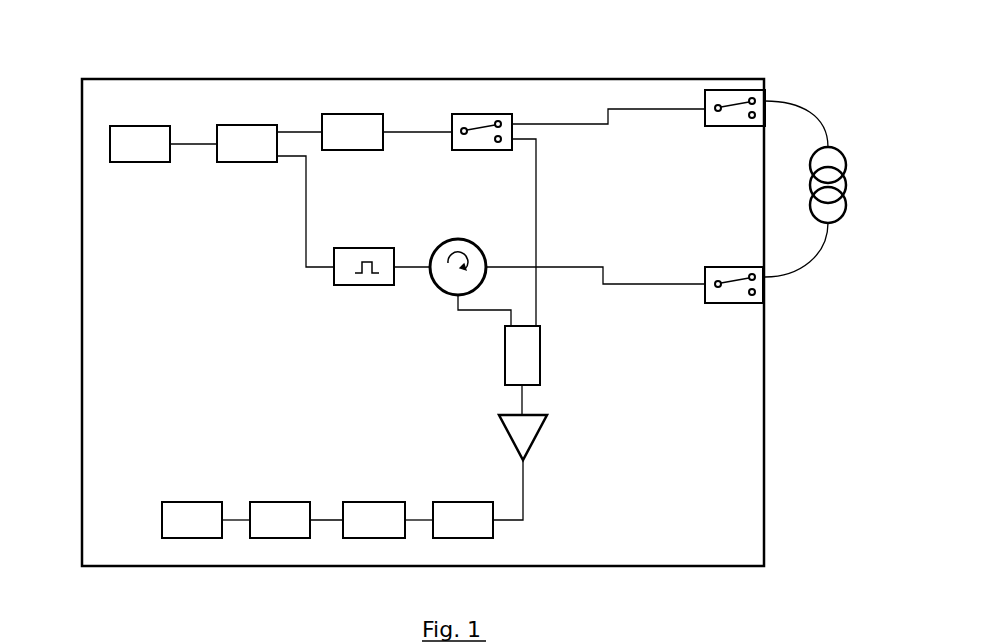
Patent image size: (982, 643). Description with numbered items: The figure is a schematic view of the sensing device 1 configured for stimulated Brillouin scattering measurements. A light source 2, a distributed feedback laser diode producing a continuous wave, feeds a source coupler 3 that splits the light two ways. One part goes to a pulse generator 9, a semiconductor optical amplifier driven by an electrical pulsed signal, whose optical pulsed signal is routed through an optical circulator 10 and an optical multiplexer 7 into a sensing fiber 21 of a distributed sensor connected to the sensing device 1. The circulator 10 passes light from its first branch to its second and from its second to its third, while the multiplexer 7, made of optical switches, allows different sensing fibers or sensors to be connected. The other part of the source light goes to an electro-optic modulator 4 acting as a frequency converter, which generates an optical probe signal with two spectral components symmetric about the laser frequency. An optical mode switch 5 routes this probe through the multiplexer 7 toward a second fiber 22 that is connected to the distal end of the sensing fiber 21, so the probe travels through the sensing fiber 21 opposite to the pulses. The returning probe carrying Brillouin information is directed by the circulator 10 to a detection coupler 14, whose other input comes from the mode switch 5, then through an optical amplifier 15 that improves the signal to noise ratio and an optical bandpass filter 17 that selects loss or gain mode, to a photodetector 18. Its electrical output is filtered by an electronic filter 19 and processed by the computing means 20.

The sensing device 1 is at (82, 322).
The light source 2 is at (140, 126).
The source coupler 3 is at (247, 125).
The electro-optic modulator 4 is at (352, 114).
The optical mode switch 5 is at (482, 114).
The optical multiplexer 7 is at (735, 90).
The pulse generator 9 is at (363, 248).
The optical circulator 10 is at (460, 239).
The detection coupler 14 is at (540, 355).
The optical amplifier 15 is at (535, 437).
The optical bandpass filter 17 is at (465, 502).
The photodetector 18 is at (377, 502).
The electronic filter 19 is at (282, 502).
The computing means 20 is at (192, 502).
The sensing fiber 21 is at (848, 188).
The second fiber 22 is at (805, 112).